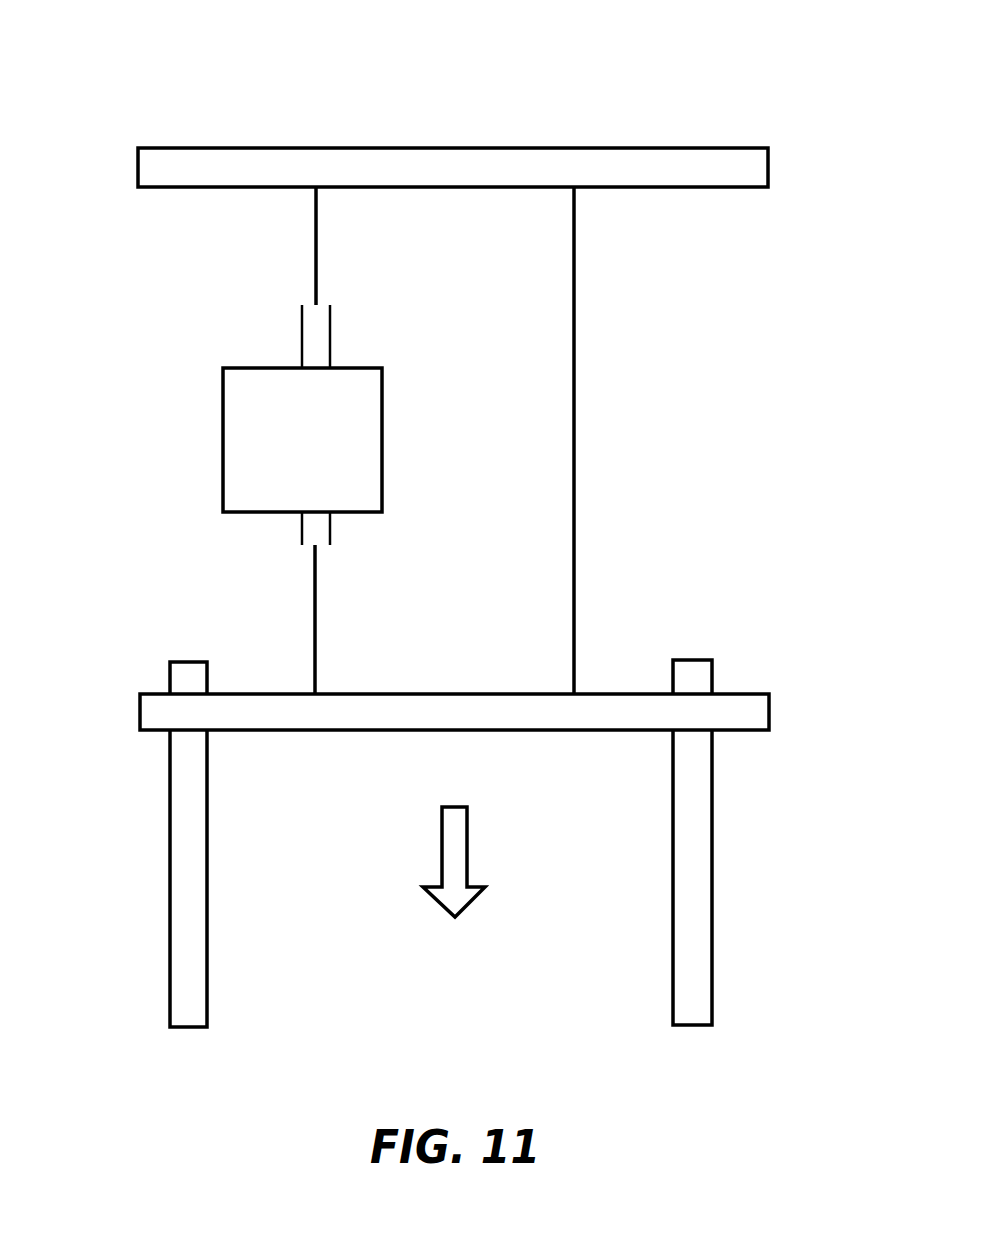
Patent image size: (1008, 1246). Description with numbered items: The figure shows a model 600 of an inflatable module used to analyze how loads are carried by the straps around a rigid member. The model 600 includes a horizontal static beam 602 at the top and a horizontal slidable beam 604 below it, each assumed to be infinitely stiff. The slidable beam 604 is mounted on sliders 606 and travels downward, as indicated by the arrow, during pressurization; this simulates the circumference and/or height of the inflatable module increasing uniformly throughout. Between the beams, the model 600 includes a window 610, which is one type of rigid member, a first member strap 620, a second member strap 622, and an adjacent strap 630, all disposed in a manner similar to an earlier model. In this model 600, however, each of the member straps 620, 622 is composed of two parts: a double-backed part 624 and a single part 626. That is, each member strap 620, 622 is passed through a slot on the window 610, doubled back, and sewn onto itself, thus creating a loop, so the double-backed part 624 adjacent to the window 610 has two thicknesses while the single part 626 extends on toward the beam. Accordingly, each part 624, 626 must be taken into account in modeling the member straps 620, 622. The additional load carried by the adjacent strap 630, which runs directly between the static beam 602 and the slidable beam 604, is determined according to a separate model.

The model 600 is at (572, 84).
The horizontal static beam 602 is at (622, 148).
The horizontal slidable beam 604 is at (735, 694).
The sliders 606 is at (170, 866).
The window 610 is at (272, 368).
The first member strap 620 is at (286, 572).
The second member strap 622 is at (313, 228).
The double-backed part 624 is at (300, 325).
The single part 626 is at (313, 650).
The adjacent strap 630 is at (575, 288).